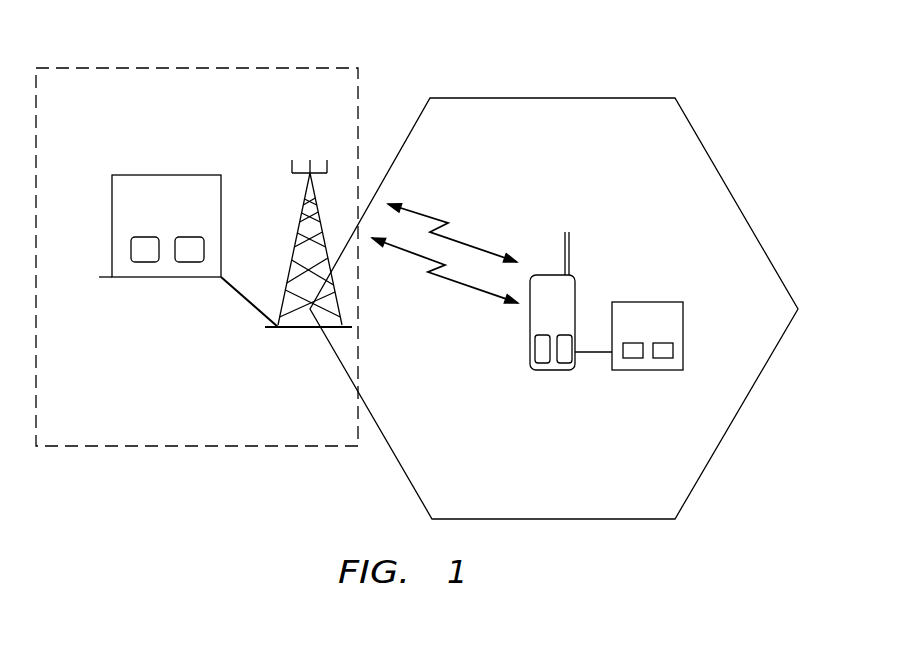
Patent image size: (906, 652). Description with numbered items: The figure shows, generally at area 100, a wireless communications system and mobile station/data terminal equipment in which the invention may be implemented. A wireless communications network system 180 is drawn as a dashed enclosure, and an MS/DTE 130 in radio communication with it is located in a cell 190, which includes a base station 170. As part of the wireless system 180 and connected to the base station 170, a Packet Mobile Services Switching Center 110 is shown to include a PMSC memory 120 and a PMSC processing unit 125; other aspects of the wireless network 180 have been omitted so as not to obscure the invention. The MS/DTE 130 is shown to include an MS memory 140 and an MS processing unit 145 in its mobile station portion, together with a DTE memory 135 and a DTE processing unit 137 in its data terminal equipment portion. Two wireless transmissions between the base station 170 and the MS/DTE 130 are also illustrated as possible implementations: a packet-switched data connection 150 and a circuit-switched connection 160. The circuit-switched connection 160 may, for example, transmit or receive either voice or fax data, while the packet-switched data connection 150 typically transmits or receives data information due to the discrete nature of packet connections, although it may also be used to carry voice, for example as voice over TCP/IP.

The area 100 is at (754, 86).
The Packet Mobile Services Switching Center 110 is at (179, 219).
The PMSC memory 120 is at (148, 264).
The PMSC processing unit 125 is at (205, 247).
The MS/DTE 130 is at (632, 324).
The DTE memory 135 is at (632, 359).
The DTE processing unit 137 is at (674, 348).
The MS memory 140 is at (542, 364).
The MS processing unit 145 is at (563, 364).
The packet-switched data connection 150 is at (463, 288).
The circuit-switched connection 160 is at (478, 245).
The base station 170 is at (280, 330).
The wireless communications network system 180 is at (167, 66).
The cell 190 is at (757, 238).